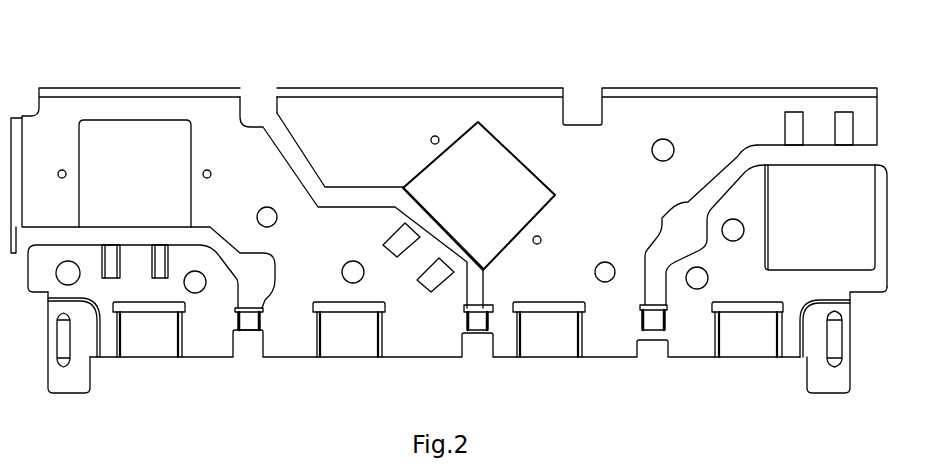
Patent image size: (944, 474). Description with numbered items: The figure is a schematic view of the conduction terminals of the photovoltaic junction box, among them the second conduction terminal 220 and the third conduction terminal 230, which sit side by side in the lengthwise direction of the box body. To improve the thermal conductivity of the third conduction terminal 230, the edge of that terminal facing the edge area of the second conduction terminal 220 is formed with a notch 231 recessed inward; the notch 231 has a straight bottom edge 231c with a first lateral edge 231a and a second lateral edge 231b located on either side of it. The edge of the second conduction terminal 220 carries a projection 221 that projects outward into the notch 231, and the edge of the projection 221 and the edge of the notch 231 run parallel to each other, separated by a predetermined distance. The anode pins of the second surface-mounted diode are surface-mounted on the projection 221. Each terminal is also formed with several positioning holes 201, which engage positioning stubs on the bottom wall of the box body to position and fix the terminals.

The positioning hole 201 is at (197, 292).
The second conduction terminal 220 is at (220, 125).
The projection 221 is at (420, 255).
The third conduction terminal 230 is at (613, 158).
The notch 231 is at (458, 256).
The first lateral edge 231a is at (345, 190).
The second lateral edge 231b is at (463, 297).
The bottom edge 231c is at (460, 257).